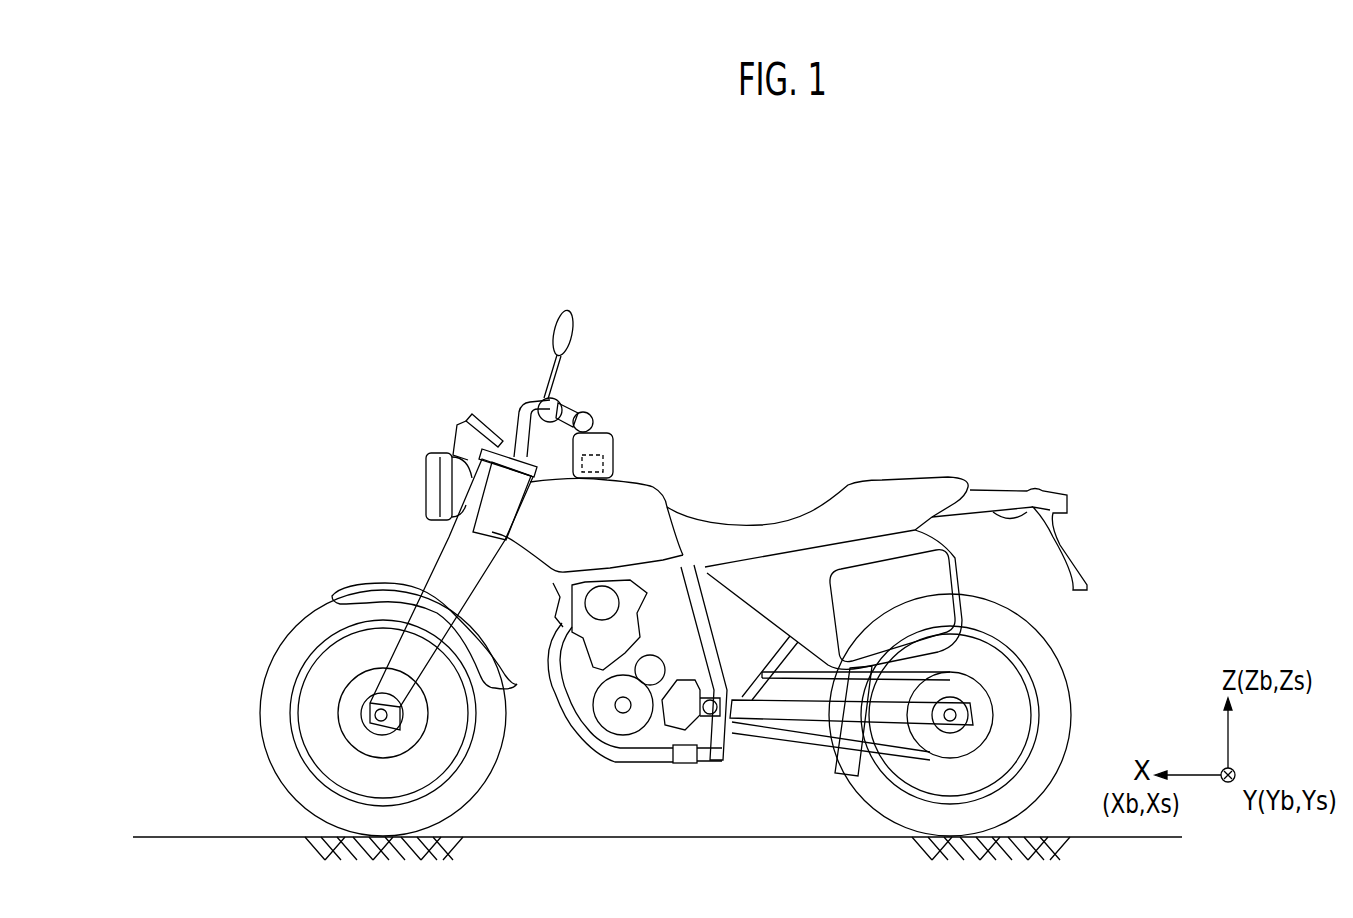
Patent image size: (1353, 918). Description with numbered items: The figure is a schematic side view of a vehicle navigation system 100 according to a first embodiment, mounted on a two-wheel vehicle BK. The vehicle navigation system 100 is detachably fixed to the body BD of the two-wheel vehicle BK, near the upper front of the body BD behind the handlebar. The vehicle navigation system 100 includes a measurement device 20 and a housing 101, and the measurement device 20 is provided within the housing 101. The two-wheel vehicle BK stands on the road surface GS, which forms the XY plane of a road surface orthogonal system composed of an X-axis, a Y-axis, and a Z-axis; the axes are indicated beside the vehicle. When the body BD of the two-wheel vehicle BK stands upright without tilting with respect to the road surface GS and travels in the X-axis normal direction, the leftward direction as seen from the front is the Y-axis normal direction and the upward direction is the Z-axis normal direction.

The measurement device 20 is at (593, 452).
The vehicle navigation system 100 is at (617, 455).
The housing 101 is at (617, 462).
The two-wheel vehicle BK is at (681, 555).
The body BD is at (909, 470).
The road surface GS is at (225, 837).